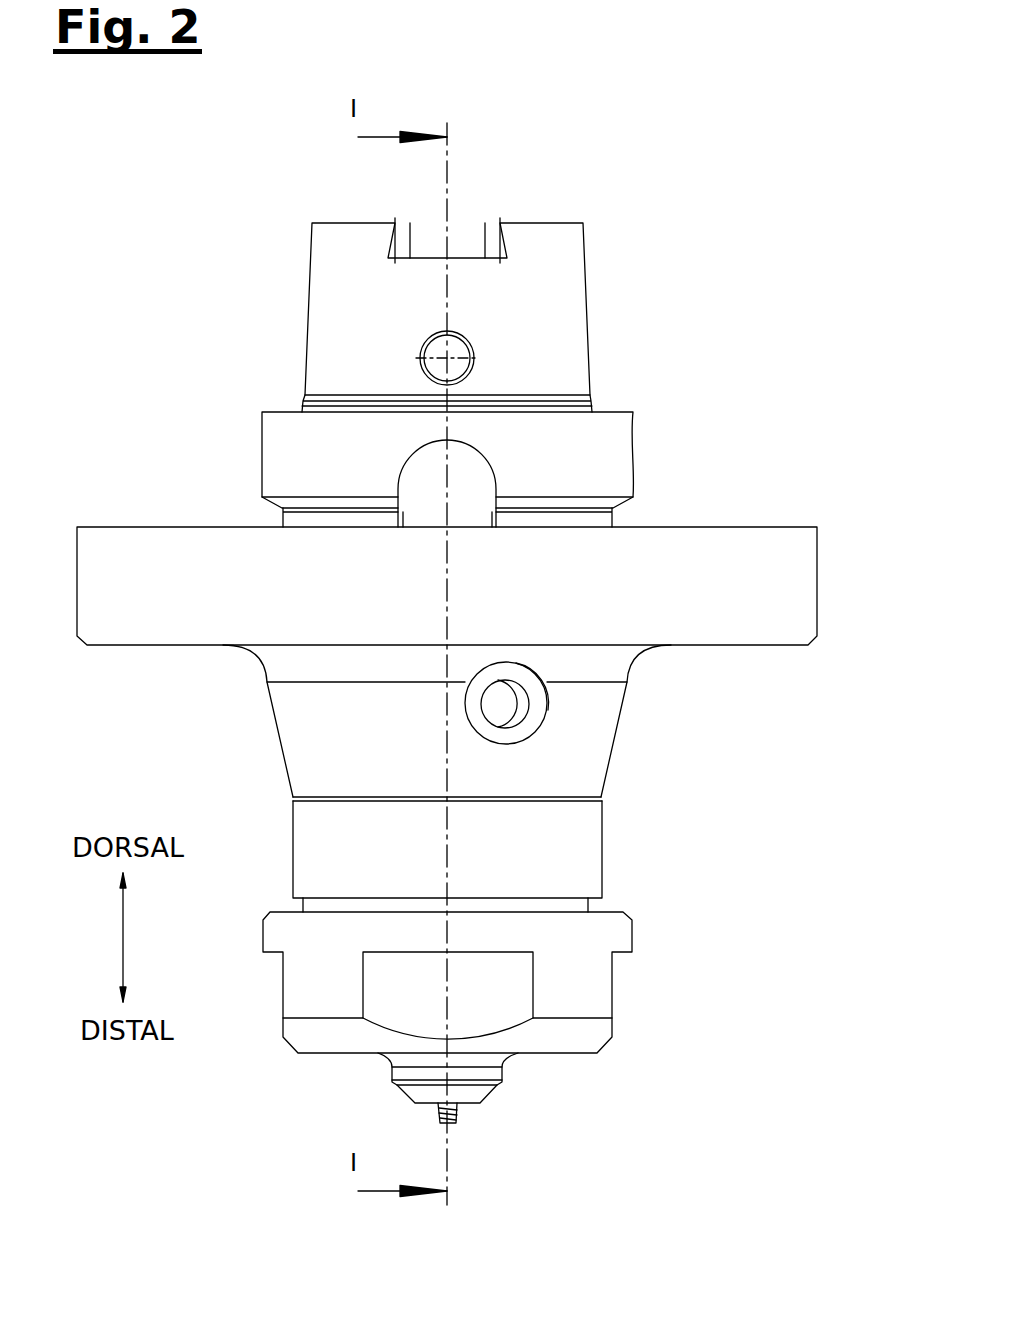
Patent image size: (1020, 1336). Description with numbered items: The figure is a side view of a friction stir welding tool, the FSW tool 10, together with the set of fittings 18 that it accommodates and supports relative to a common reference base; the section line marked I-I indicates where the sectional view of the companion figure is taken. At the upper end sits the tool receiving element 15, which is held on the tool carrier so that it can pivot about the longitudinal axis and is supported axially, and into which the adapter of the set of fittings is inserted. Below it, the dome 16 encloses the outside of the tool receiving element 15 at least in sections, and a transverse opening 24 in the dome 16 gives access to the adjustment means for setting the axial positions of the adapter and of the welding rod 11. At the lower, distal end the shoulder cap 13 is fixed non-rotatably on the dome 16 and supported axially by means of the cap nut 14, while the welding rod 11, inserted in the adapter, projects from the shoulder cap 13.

The FSW tool 10 is at (447, 743).
The set of fittings 18 is at (447, 743).
The tool receiving element 15 is at (622, 430).
The opening 24 is at (505, 703).
The dome 16 is at (583, 827).
The cap nut 14 is at (598, 1033).
The shoulder cap 13 is at (483, 1090).
The welding rod 11 is at (455, 1120).